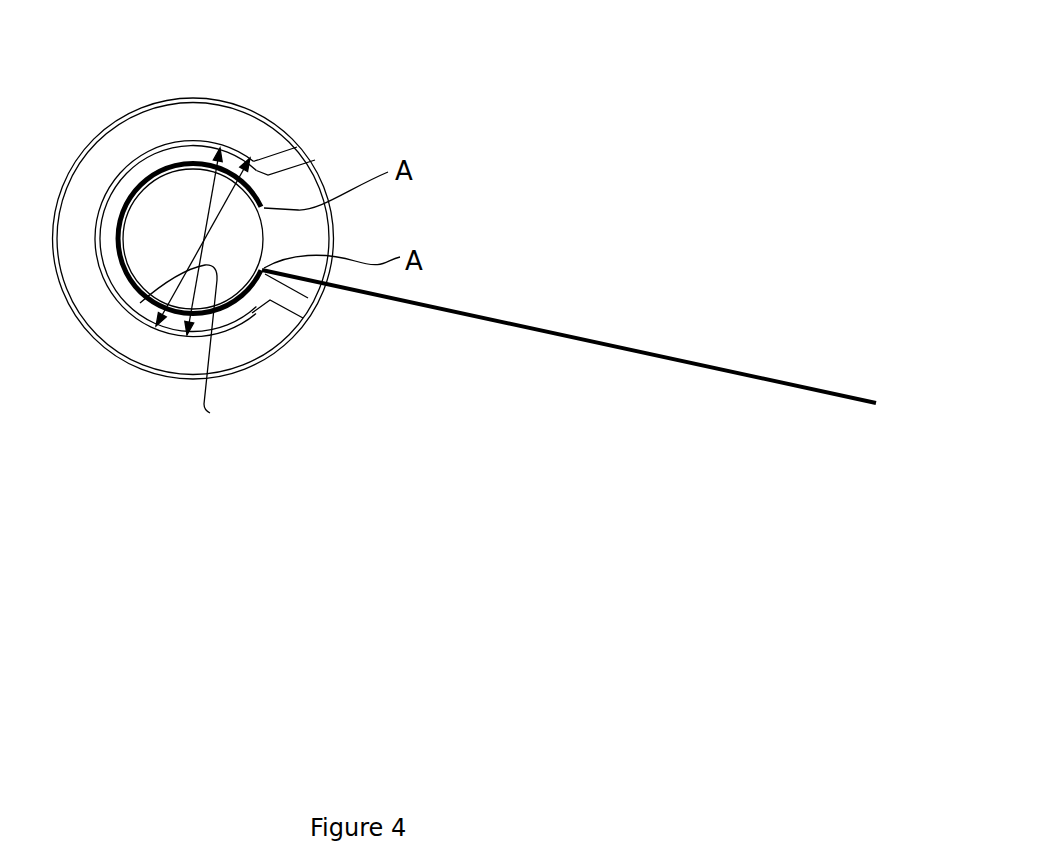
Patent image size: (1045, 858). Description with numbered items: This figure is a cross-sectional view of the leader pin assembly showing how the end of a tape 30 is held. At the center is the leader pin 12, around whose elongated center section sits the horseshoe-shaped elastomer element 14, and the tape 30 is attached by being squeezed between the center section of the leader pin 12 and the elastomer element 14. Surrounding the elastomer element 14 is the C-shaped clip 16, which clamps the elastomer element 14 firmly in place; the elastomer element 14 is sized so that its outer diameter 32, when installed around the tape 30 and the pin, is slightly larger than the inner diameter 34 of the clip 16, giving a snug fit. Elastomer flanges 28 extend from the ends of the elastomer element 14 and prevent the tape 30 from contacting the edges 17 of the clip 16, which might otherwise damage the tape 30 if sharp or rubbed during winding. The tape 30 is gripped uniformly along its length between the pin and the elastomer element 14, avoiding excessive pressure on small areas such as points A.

The leader pin 12 is at (267, 237).
The elastomer element 14 is at (238, 320).
The C-shaped clip 16 is at (248, 125).
The clip edges 17 is at (285, 145).
The elastomer flanges 28 is at (297, 172).
The tape 30 is at (612, 340).
The outer diameter of elastomer element 32 is at (186, 361).
The inner diameter of clip 34 is at (201, 246).